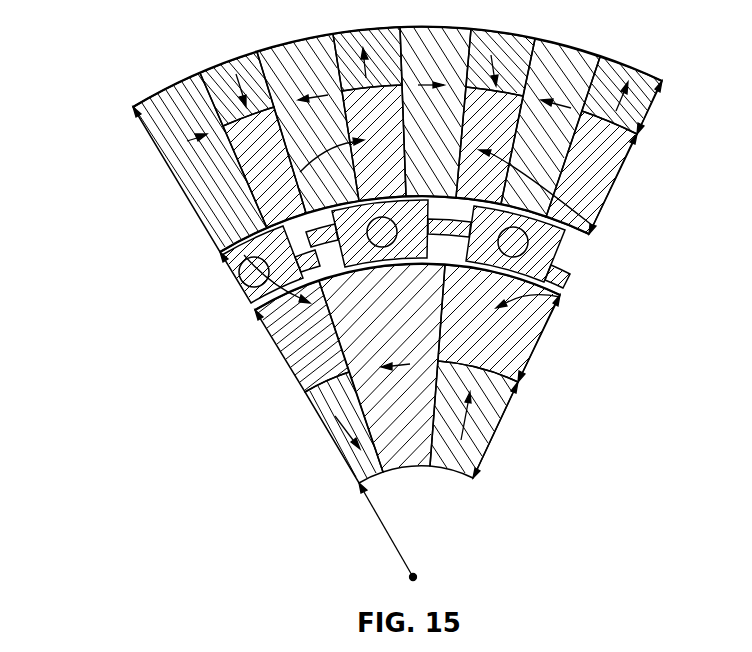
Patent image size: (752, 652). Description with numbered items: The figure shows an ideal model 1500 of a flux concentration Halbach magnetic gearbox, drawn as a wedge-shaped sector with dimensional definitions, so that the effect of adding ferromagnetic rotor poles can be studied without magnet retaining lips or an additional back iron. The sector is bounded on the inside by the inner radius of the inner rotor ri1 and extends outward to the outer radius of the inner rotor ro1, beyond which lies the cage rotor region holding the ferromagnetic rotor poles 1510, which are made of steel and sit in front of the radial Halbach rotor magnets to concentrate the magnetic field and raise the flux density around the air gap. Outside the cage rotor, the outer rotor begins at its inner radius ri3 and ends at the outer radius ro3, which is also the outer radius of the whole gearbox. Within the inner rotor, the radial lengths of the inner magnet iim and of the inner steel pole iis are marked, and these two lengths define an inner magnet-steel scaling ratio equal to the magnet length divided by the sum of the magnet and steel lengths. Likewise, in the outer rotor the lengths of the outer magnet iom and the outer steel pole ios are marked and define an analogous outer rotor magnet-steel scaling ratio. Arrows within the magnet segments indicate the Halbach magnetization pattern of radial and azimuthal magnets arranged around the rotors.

The ideal flux concentration Halbach magnetic gearbox model 1500 is at (128, 40).
The ferromagnetic rotor poles 1510 is at (262, 183).
The inner rotor magnet length iim is at (501, 430).
The inner rotor steel pole length iis is at (544, 338).
The outer rotor steel pole length ios is at (622, 184).
The outer rotor magnet length iom is at (660, 107).
The outer radius of the outer rotor ro3 is at (141, 139).
The inner radius of the outer rotor ri3 is at (219, 280).
The outer radius of the inner rotor ro1 is at (248, 335).
The inner radius of the inner rotor ri1 is at (386, 532).